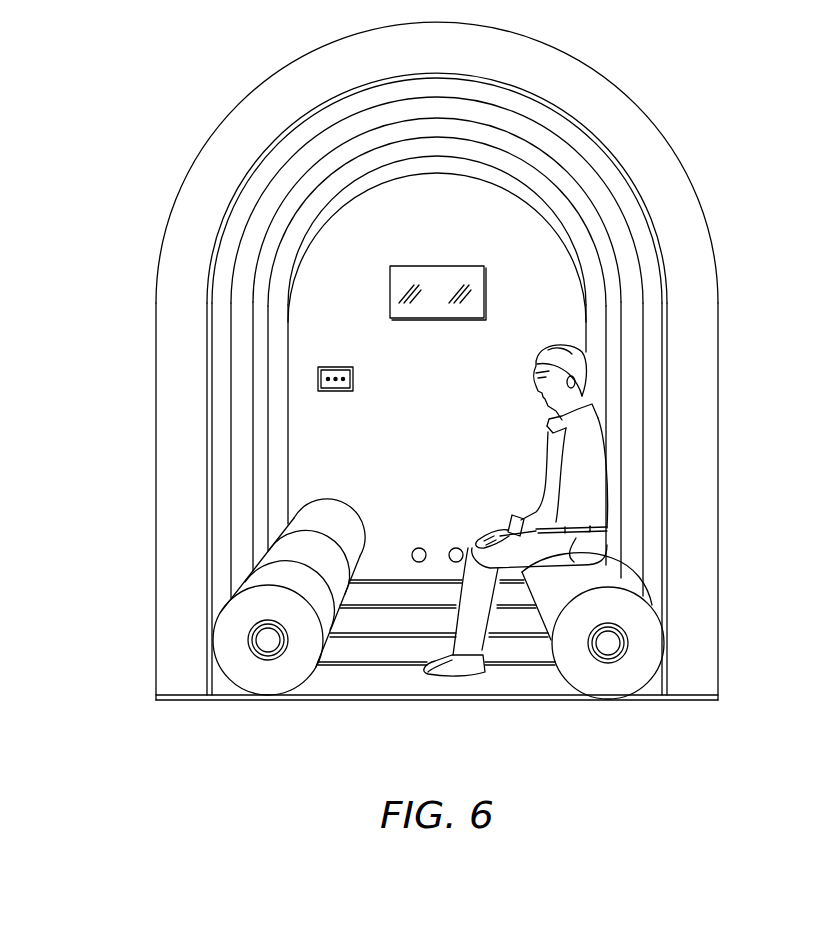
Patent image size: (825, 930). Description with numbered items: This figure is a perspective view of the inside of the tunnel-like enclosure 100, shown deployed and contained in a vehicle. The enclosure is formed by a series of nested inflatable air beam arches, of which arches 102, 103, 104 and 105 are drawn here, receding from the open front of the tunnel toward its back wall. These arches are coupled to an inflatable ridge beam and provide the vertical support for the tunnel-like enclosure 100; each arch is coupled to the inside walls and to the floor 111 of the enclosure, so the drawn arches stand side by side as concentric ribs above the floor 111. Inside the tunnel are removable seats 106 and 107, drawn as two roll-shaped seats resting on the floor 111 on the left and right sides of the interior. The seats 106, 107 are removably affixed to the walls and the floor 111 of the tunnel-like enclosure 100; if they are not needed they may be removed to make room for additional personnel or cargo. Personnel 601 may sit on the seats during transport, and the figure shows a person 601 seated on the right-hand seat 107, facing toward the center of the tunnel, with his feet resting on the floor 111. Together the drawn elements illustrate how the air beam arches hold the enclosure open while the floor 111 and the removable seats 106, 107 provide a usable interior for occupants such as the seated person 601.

The tunnel-like enclosure 100 is at (208, 83).
The inflatable air beam arch 102 is at (224, 451).
The inflatable air beam arch 103 is at (248, 422).
The inflatable air beam arch 104 is at (282, 335).
The inflatable air beam arch 105 is at (291, 286).
The removable seat 106 is at (263, 603).
The removable seat 107 is at (612, 598).
The floor 111 is at (508, 678).
The personnel 601 is at (548, 472).